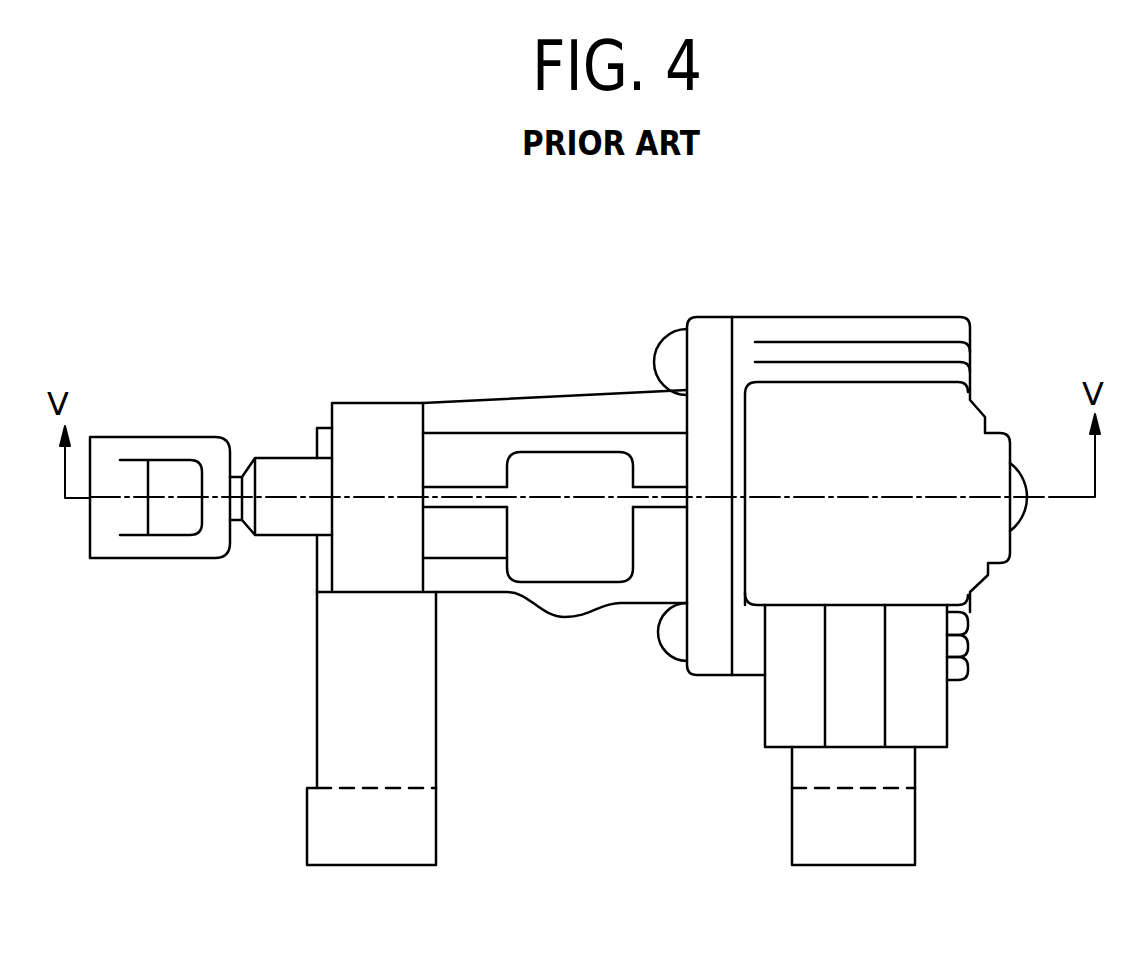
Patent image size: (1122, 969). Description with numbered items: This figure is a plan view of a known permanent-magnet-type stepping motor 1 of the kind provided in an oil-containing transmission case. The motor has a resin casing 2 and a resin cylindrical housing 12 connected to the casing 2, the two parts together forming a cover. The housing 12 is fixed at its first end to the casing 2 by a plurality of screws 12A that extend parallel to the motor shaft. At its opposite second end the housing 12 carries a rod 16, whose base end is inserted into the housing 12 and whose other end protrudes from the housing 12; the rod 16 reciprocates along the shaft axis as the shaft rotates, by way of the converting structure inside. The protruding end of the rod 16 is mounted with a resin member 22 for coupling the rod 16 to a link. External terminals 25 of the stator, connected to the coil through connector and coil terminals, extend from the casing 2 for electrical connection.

The permanent-magnet-type stepping motor 1 is at (909, 305).
The resin casing 2 is at (972, 342).
The resin cylindrical housing 12 is at (478, 395).
The screws 12A is at (663, 343).
The rod 16 is at (285, 458).
The resin member 22 is at (192, 437).
The external terminals 25 is at (932, 717).